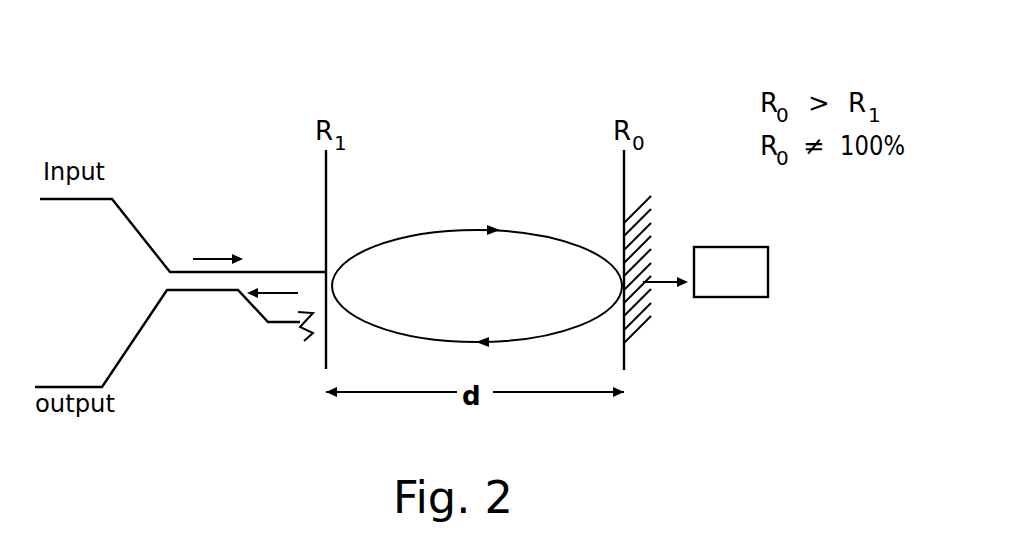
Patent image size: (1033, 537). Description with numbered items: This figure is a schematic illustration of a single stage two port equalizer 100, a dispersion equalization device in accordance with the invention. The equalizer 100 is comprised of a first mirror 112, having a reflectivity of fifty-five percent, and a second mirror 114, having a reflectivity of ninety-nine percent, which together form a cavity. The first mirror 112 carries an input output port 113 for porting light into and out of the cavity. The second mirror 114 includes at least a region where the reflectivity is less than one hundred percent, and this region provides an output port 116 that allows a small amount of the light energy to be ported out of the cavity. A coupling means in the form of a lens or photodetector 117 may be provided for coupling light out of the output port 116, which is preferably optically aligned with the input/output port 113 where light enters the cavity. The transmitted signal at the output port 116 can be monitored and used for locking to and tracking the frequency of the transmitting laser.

The single stage two port equalizer 100 is at (400, 93).
The first mirror 112 is at (325, 177).
The input output port 113 is at (324, 271).
The second mirror 114 is at (623, 153).
The output port 116 is at (643, 290).
The photodetector 117 is at (768, 255).